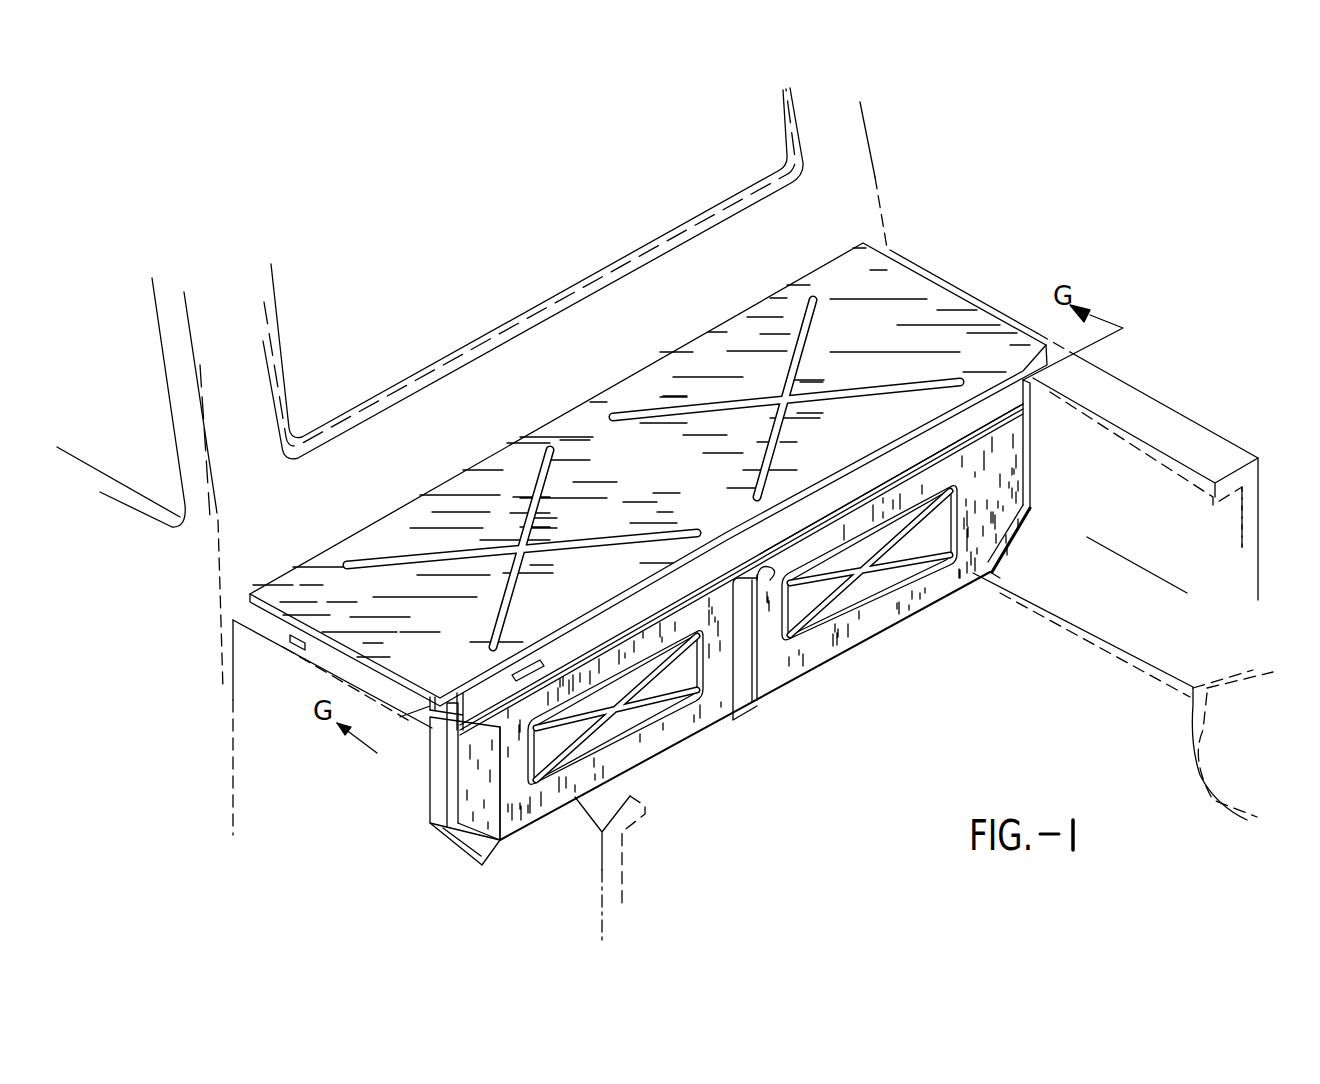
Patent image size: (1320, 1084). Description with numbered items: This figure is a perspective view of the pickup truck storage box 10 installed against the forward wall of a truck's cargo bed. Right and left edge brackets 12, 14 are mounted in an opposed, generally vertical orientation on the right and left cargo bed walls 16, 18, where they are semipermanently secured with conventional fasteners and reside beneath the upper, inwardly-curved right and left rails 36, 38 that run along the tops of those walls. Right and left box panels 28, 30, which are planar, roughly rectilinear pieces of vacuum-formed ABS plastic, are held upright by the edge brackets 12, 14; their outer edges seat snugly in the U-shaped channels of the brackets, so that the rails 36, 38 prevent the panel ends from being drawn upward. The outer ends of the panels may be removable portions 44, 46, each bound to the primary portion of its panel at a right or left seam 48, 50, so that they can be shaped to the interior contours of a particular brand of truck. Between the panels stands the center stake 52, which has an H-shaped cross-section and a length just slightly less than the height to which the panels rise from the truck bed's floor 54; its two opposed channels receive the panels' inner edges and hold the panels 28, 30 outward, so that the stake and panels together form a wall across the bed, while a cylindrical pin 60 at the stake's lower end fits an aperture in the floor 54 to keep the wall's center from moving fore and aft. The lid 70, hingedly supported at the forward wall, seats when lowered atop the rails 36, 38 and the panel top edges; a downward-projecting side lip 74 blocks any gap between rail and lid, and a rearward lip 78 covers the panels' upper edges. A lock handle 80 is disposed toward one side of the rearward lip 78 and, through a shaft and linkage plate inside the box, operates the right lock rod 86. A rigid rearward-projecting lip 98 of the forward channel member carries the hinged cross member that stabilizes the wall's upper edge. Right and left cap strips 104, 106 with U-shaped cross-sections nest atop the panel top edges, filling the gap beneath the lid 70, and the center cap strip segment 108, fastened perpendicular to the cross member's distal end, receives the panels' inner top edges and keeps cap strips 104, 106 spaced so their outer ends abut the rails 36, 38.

The storage box 10 is at (671, 519).
The right edge bracket 12 is at (462, 856).
The left edge bracket 14 is at (1033, 470).
The right cargo bed wall 16 is at (210, 750).
The left cargo bed wall 18 is at (1200, 527).
The right box panel 28 is at (680, 762).
The left box panel 30 is at (905, 636).
The right rail 36 is at (630, 796).
The left rail 38 is at (1195, 440).
The removable portion 44 is at (472, 787).
The removable portion 46 is at (1020, 530).
The right seam 48 is at (503, 810).
The left seam 50 is at (1003, 540).
The center stake 52 is at (747, 668).
The floor 54 is at (927, 752).
The cylindrical pin 60 is at (740, 725).
The lid 70 is at (664, 468).
The side lip 74 is at (468, 700).
The rearward lip 78 is at (940, 440).
The lock handle 80 is at (550, 657).
The right lock rod 86 is at (430, 707).
The rearward-projecting lip 98 is at (305, 640).
The right cap strip 104 is at (630, 650).
The left cap strip 106 is at (860, 500).
The center cap strip segment 108 is at (772, 565).